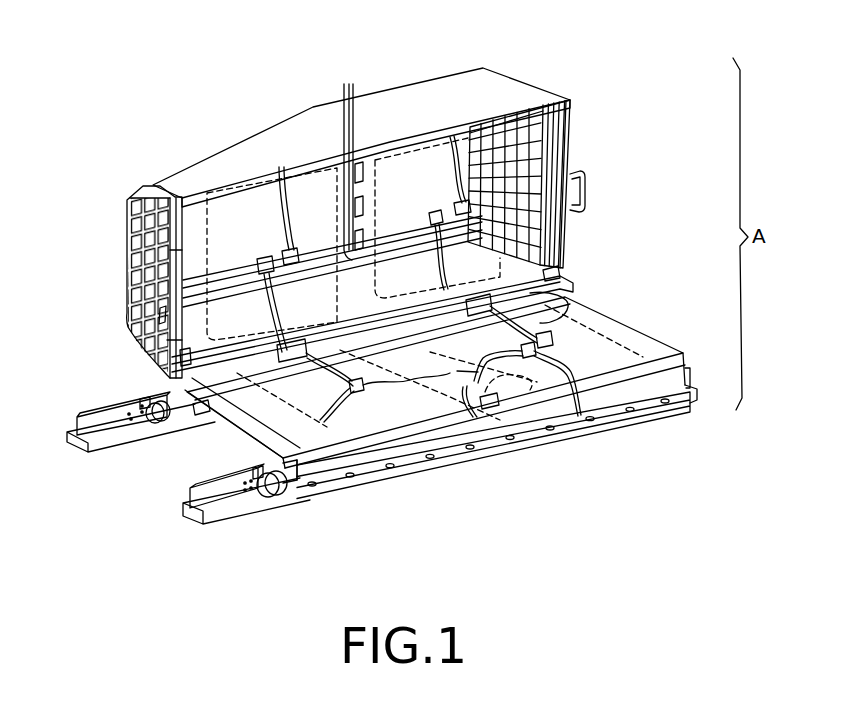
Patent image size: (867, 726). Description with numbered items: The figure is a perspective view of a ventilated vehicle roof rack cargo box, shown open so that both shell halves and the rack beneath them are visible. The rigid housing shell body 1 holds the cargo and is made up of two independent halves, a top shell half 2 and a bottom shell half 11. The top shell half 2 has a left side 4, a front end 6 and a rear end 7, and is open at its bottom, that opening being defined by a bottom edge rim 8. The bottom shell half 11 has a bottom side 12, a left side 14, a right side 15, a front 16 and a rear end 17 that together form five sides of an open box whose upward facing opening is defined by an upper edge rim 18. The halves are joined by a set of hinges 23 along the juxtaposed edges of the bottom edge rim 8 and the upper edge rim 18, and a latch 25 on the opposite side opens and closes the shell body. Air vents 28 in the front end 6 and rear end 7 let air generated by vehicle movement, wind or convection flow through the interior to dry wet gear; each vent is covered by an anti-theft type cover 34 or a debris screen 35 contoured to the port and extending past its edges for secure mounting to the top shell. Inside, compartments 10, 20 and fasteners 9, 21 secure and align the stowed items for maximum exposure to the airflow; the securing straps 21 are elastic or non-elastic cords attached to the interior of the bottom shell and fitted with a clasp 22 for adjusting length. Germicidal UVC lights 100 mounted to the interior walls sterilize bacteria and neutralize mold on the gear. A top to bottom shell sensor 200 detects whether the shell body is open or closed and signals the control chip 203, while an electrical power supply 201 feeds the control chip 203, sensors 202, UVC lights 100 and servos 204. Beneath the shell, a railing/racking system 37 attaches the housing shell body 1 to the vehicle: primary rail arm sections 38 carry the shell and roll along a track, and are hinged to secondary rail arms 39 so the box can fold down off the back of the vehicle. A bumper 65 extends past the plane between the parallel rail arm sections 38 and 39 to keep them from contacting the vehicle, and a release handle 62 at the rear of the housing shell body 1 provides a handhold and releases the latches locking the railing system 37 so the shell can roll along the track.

The housing shell body 1 is at (122, 110).
The top shell half 2 is at (150, 168).
The left side 4 is at (497, 85).
The front end 6 is at (123, 302).
The rear end 7 is at (573, 117).
The bottom edge rim 8 is at (573, 283).
The fasteners 9 is at (464, 130).
The compartments 10 is at (295, 168).
The bottom shell half 11 is at (648, 323).
The bottom side 12 is at (478, 402).
The left side 14 is at (607, 383).
The right side 15 is at (212, 383).
The front 16 is at (205, 485).
The rear end 17 is at (670, 343).
The upper edge rim 18 is at (553, 265).
The compartments 20 is at (403, 478).
The securing straps 21 is at (418, 415).
The clasp 22 is at (456, 370).
The hinges 23 is at (570, 285).
The latch 25 is at (497, 402).
The air vents 28 is at (570, 133).
The anti-theft type covers 34 is at (568, 160).
The debris screen 35 is at (570, 242).
The railing/racking system 37 is at (704, 393).
The primary rail arm section 38 is at (325, 473).
The secondary rail arm 39 is at (208, 498).
The release handle 62 is at (586, 194).
The bumper 65 is at (688, 372).
The UVC lights 100 is at (347, 161).
The top to bottom shell sensor 200 is at (165, 313).
The electrical power supply 201 is at (177, 388).
The sensors 202 is at (170, 256).
The control chip 203 is at (168, 223).
The servos 204 is at (167, 340).